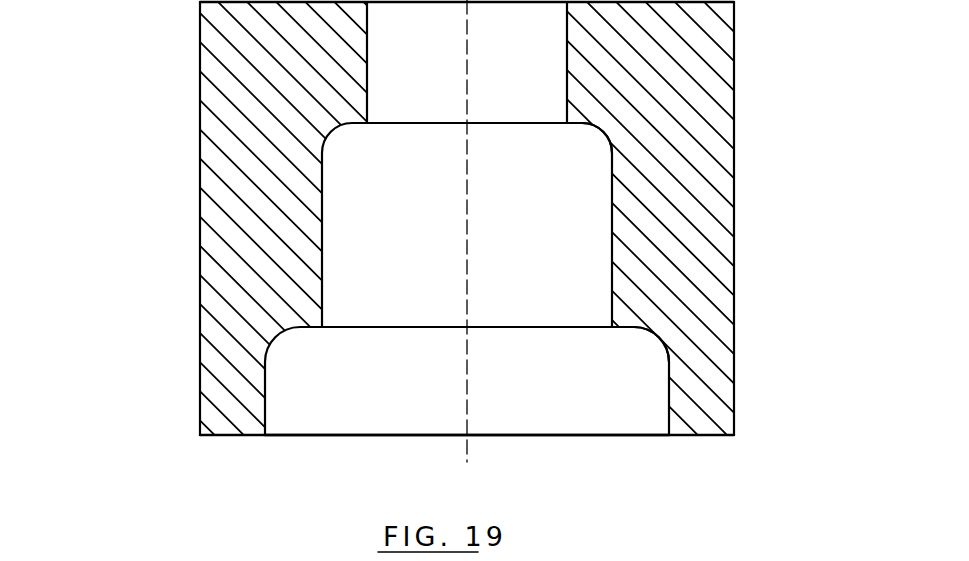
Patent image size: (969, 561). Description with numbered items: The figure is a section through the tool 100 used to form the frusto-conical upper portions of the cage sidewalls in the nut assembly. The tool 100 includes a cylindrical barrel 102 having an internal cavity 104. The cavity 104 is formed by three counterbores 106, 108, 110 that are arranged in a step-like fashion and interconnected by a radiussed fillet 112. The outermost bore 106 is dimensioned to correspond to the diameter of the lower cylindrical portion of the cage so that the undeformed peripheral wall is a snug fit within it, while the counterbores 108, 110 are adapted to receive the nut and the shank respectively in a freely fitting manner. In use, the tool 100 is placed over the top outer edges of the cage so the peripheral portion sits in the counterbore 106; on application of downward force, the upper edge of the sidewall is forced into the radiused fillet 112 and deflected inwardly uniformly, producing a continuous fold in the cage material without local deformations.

The tool 100 is at (188, 240).
The cylindrical barrel 102 is at (212, 334).
The internal cavity 104 is at (325, 392).
The outermost bore 106 is at (590, 384).
The counterbore 108 is at (590, 244).
The counterbore 110 is at (482, 73).
The radiussed fillet 112 is at (604, 147).